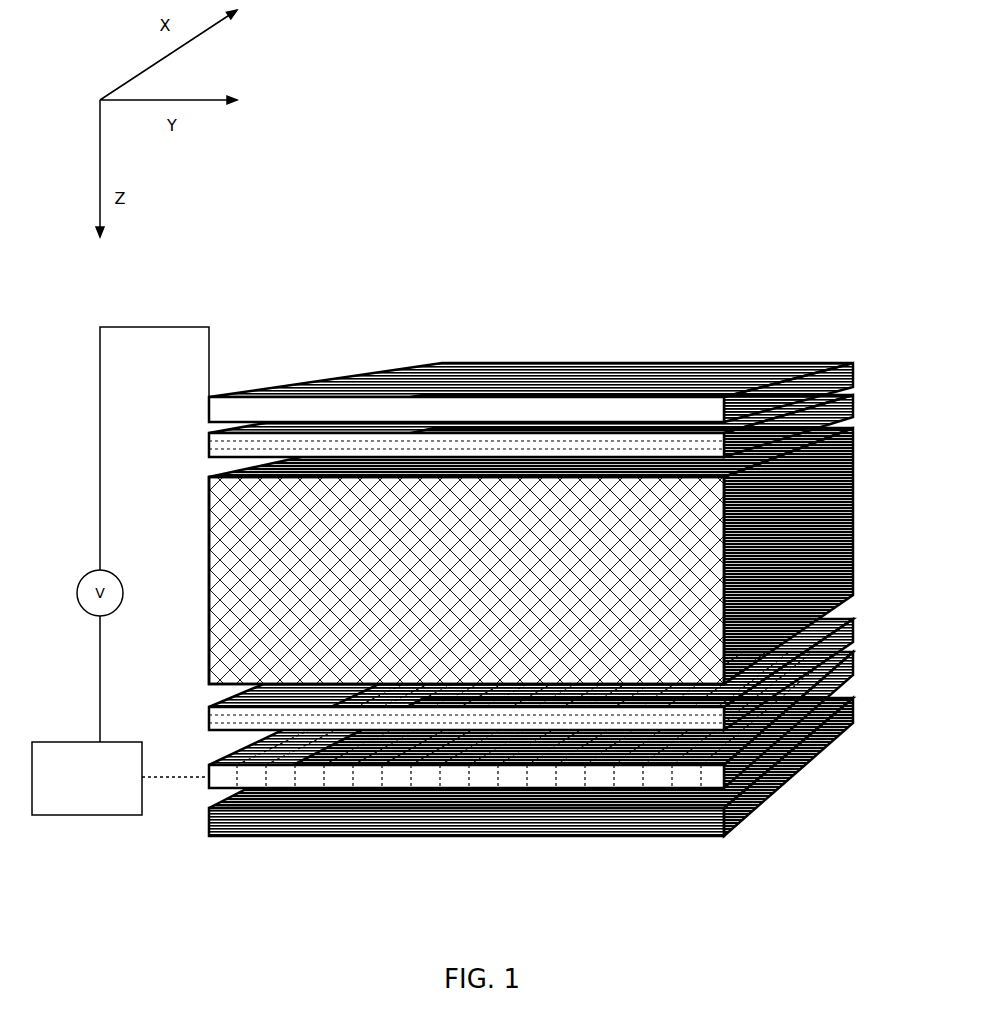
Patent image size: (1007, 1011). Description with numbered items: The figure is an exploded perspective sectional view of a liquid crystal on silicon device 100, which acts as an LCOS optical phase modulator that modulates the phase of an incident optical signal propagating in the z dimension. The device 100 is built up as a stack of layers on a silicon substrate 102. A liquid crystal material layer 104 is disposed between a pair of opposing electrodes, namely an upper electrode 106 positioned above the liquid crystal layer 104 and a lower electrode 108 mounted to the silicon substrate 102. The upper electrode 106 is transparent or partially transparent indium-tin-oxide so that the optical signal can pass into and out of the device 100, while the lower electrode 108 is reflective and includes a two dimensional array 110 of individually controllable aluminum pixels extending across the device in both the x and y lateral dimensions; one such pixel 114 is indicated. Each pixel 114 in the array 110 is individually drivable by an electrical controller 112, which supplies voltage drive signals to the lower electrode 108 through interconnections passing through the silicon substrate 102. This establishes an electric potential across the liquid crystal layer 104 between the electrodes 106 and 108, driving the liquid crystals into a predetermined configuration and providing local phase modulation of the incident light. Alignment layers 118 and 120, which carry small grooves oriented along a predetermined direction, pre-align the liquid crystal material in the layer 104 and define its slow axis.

The liquid crystal on silicon (LCOS) device 100 is at (574, 252).
The silicon substrate 102 is at (519, 783).
The liquid crystal material layer 104 is at (833, 552).
The upper electrode 106 is at (855, 366).
The lower electrode 108 is at (563, 754).
The two dimensional array of pixels 110 is at (818, 748).
The electrical controller 112 is at (102, 817).
The pixel 114 is at (592, 746).
The alignment layer 118 is at (855, 628).
The alignment layer 120 is at (857, 394).